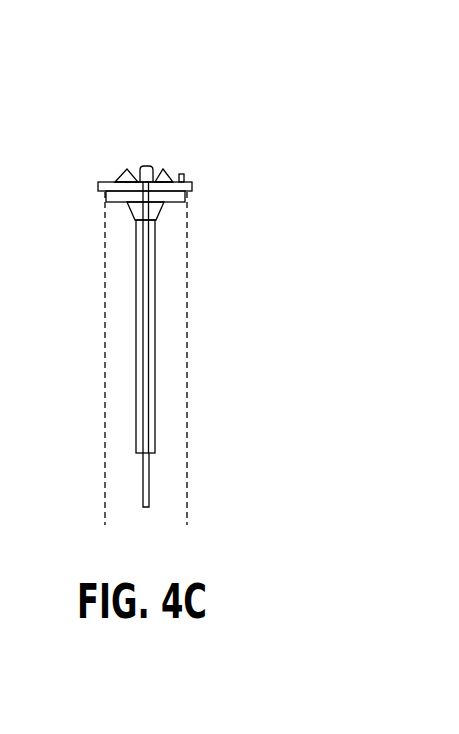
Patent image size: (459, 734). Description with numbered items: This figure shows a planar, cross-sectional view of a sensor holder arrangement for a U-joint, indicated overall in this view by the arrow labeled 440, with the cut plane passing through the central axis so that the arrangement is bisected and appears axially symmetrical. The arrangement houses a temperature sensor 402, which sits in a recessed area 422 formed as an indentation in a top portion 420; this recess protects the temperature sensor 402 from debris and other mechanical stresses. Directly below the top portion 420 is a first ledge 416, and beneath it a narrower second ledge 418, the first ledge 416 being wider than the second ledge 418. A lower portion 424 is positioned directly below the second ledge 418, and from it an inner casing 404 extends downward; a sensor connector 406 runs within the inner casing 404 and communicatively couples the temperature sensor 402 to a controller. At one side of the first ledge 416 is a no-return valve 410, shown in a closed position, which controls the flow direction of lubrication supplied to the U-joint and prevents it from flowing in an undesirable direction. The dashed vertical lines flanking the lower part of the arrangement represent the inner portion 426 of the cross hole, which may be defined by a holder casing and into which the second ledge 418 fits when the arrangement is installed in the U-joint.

The delivery device assembly 440 is at (273, 58).
The temperature sensor 402 is at (152, 166).
The inner casing 404 is at (155, 258).
The sensor connector 406 is at (148, 476).
The no-return valve 410 is at (185, 175).
The first ledge 416 is at (98, 183).
The second ledge 418 is at (106, 196).
The top portion 420 is at (123, 174).
The recessed area 422 is at (132, 158).
The lower portion 424 is at (163, 211).
The inner portion 426 is at (105, 325).